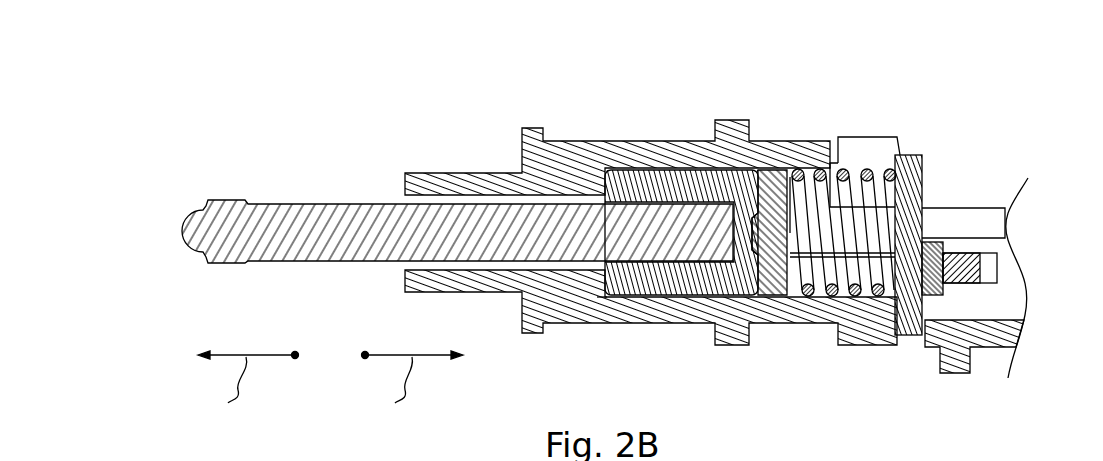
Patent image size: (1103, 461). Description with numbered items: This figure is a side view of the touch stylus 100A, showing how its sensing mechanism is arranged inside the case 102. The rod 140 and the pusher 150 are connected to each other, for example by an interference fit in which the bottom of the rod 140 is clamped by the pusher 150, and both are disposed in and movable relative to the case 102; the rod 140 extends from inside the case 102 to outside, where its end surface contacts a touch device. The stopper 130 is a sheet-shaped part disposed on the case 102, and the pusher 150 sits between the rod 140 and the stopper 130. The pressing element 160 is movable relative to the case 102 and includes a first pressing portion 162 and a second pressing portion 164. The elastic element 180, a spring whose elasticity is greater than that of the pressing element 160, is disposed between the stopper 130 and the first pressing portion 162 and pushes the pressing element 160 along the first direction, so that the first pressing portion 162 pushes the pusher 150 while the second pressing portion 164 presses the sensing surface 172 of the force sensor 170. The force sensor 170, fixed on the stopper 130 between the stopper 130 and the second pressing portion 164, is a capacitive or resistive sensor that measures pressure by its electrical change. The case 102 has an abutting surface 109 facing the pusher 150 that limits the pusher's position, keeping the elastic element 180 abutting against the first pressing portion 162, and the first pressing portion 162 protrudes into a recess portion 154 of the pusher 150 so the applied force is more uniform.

The touch stylus 100A is at (153, 67).
The case 102 is at (461, 188).
The abutting surface 109 is at (593, 288).
The stopper 130 is at (908, 320).
The rod 140 is at (323, 234).
The pusher 150 is at (662, 188).
The recess portion 154 is at (748, 252).
The pressing element 160 is at (940, 67).
The first pressing portion 162 is at (770, 180).
The second pressing portion 164 is at (963, 268).
The force sensor 170 is at (937, 285).
The sensing surface 172 is at (950, 292).
The elastic element 180 is at (824, 266).